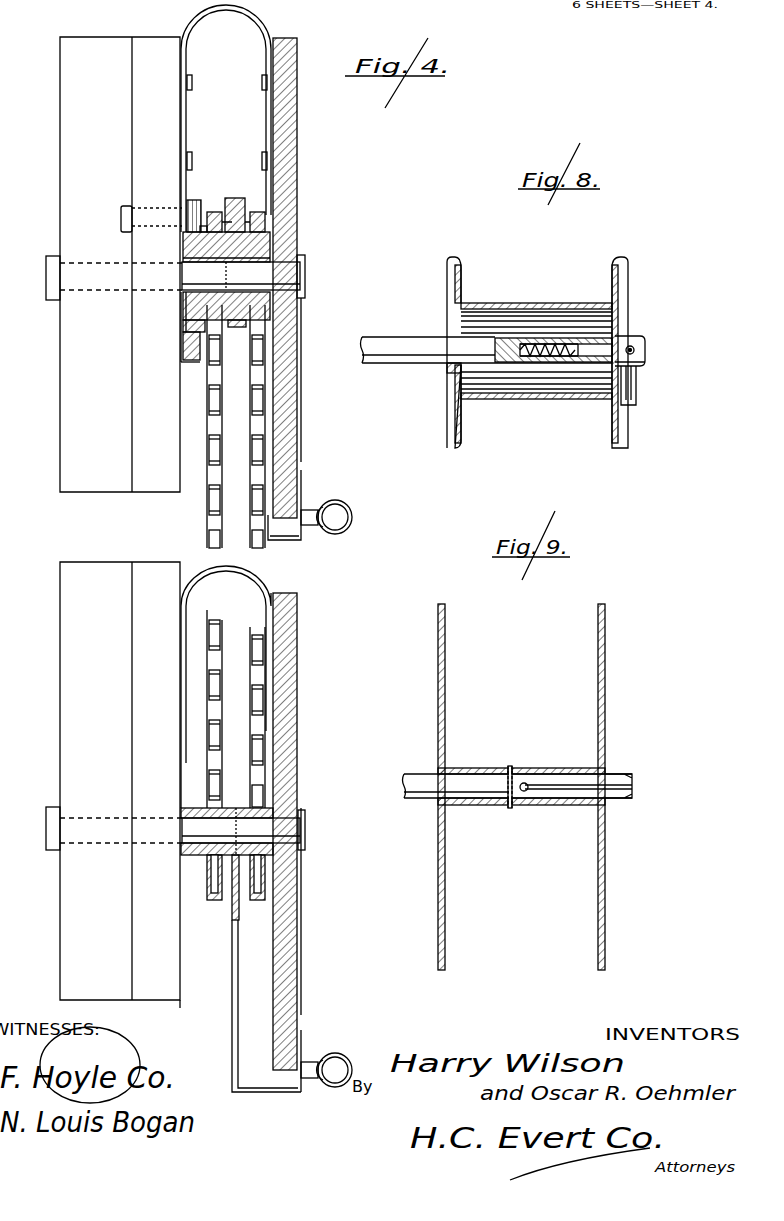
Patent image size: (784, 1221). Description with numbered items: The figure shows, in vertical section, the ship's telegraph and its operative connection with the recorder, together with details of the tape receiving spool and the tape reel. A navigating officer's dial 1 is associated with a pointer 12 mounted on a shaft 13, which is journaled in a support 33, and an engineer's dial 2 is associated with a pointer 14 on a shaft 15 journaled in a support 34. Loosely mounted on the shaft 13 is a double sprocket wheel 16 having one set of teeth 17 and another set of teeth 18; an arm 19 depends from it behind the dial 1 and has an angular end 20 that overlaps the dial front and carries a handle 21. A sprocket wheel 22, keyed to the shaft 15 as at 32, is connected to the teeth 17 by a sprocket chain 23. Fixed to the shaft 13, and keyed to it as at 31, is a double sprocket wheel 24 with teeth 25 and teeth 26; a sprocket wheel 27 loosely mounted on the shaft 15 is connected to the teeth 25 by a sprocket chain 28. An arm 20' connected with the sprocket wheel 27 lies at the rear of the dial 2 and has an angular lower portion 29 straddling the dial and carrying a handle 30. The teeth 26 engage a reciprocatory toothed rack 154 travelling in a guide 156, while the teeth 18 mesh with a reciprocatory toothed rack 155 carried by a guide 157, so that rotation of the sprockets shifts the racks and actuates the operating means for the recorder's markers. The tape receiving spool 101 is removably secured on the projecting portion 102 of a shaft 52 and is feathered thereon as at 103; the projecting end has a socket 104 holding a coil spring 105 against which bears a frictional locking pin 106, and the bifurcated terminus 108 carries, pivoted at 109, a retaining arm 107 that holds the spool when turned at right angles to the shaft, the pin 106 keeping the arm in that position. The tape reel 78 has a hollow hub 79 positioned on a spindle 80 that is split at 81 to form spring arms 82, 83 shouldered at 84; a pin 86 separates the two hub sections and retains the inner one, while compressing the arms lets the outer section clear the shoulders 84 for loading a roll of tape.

In FIG. 4, the navigating officer's dial 1 is at (285, 400).
In FIG. 4, the engineer's dial 2 is at (297, 640).
In FIG. 4, the pointer 12 is at (303, 330).
In FIG. 4, the shaft 13 is at (283, 277).
In FIG. 4, the pointer 14 is at (306, 947).
In FIG. 4, the shaft 15 is at (290, 828).
In FIG. 4, the double sprocket wheel 16 is at (266, 250).
In FIG. 4, the set of teeth 17 is at (265, 228).
In FIG. 4, the set of teeth 18 is at (268, 237).
In FIG. 4, the arm 19 is at (275, 525).
In FIG. 4, the angular end 20 is at (329, 538).
In FIG. 4, the arm 20' is at (248, 973).
In FIG. 4, the handle 21 is at (347, 504).
In FIG. 4, the sprocket wheel 22 is at (297, 797).
In FIG. 4, the sprocket chain 23 is at (262, 700).
In FIG. 4, the double sprocket wheel 24 is at (183, 294).
In FIG. 4, the set of teeth 25 is at (183, 258).
In FIG. 4, the set of teeth 26 is at (185, 235).
In FIG. 4, the sprocket wheel 27 is at (200, 855).
In FIG. 4, the sprocket chain 28 is at (215, 648).
In FIG. 4, the angular lower portion 29 is at (100, 400).
In FIG. 4, the handle 30 is at (345, 1058).
In FIG. 4, the key 31 is at (190, 310).
In FIG. 4, the key 32 is at (245, 860).
In FIG. 4, the support 33 is at (60, 135).
In FIG. 4, the support 34 is at (73, 758).
In FIG. 8, the shaft 52 is at (395, 335).
In FIG. 9, the tape reel 78 is at (606, 695).
In FIG. 9, the hollow hub 79 is at (558, 768).
In FIG. 9, the spindle 80 is at (488, 800).
In FIG. 9, the split 81 is at (556, 800).
In FIG. 9, the spring arm 82 is at (590, 773).
In FIG. 9, the spring arm 83 is at (580, 805).
In FIG. 9, the shoulders 84 is at (610, 777).
In FIG. 9, the pin 86 is at (510, 766).
In FIG. 8, the tape receiving spool 101 is at (530, 302).
In FIG. 8, the projecting portion 102 is at (455, 360).
In FIG. 8, the feather 103 is at (462, 330).
In FIG. 8, the socket 104 is at (560, 340).
In FIG. 8, the coil spring 105 is at (550, 365).
In FIG. 8, the frictional locking pin 106 is at (605, 335).
In FIG. 8, the pivoted retaining arm 107 is at (648, 350).
In FIG. 8, the bifurcated terminus 108 is at (635, 340).
In FIG. 8, the pivot 109 is at (633, 355).
In FIG. 4, the reciprocatory toothed rack 154 is at (183, 340).
In FIG. 4, the reciprocatory toothed rack 155 is at (248, 207).
In FIG. 4, the guide 156 is at (193, 367).
In FIG. 4, the guide 157 is at (208, 200).